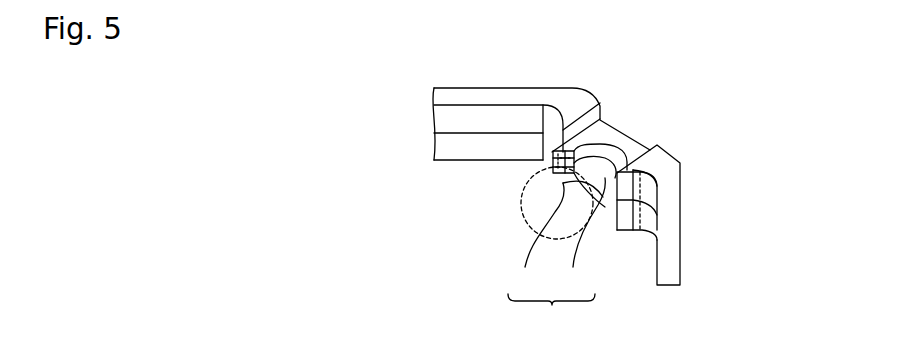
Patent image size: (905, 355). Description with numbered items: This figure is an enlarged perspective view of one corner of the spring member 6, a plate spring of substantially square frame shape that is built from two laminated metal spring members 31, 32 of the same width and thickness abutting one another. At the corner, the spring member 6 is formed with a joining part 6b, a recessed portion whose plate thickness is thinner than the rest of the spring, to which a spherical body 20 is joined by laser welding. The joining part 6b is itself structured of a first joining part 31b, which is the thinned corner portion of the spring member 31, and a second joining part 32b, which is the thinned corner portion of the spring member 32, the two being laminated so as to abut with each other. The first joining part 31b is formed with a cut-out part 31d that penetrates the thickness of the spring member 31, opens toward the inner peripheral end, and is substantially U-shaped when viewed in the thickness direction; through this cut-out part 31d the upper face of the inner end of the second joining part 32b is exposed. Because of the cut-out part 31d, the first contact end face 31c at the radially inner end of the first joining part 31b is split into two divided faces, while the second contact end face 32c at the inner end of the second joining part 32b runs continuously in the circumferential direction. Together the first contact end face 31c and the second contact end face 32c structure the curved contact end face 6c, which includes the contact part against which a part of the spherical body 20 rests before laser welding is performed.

The spring member 6 is at (516, 99).
The spring member 31 is at (492, 88).
The cut-out part 31d is at (600, 148).
The joining part 6b is at (640, 187).
The first joining part 31b is at (625, 134).
The spring member 32 is at (445, 162).
The second joining part 32b is at (552, 173).
The spherical body 20 is at (521, 206).
The first contact end face 31c is at (537, 238).
The second contact end face 32c is at (581, 236).
The contact end face 6c is at (551, 313).